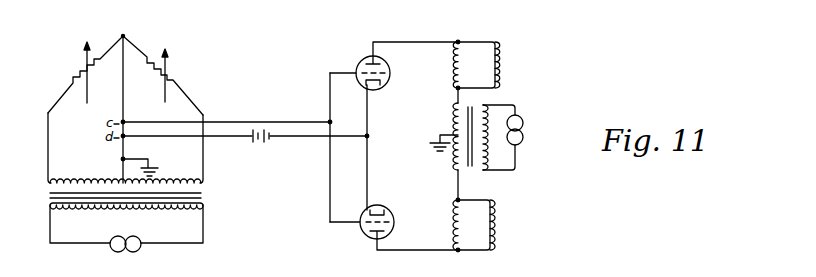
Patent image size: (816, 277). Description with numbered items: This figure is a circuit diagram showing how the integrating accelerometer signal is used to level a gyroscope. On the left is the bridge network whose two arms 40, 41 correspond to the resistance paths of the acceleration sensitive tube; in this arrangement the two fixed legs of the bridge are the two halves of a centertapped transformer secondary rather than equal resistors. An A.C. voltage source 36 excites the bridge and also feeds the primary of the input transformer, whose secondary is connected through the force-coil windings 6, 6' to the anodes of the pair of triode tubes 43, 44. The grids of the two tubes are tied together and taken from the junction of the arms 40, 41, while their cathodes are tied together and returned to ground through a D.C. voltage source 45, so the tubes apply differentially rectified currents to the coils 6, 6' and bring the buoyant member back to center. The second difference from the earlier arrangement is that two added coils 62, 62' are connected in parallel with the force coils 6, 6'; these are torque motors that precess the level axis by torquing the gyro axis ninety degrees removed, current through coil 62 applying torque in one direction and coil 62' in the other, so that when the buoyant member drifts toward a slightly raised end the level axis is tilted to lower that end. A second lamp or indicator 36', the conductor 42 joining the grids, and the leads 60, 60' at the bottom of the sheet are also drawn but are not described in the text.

The force-coil winding 6 is at (449, 65).
The force-coil winding 6' is at (445, 225).
The source of A.C. voltage 36 is at (521, 137).
The indicating lamp 36' is at (126, 238).
The bridge arm 40 is at (84, 71).
The bridge arm 41 is at (169, 70).
The grid conductor 42 is at (330, 181).
The triode tube 43 is at (360, 65).
The triode tube 44 is at (358, 229).
The D.C. voltage source 45 is at (254, 146).
The lead 60 is at (281, 271).
The lead 60' is at (247, 271).
The torque coil 62 is at (494, 65).
The torque coil 62' is at (493, 225).